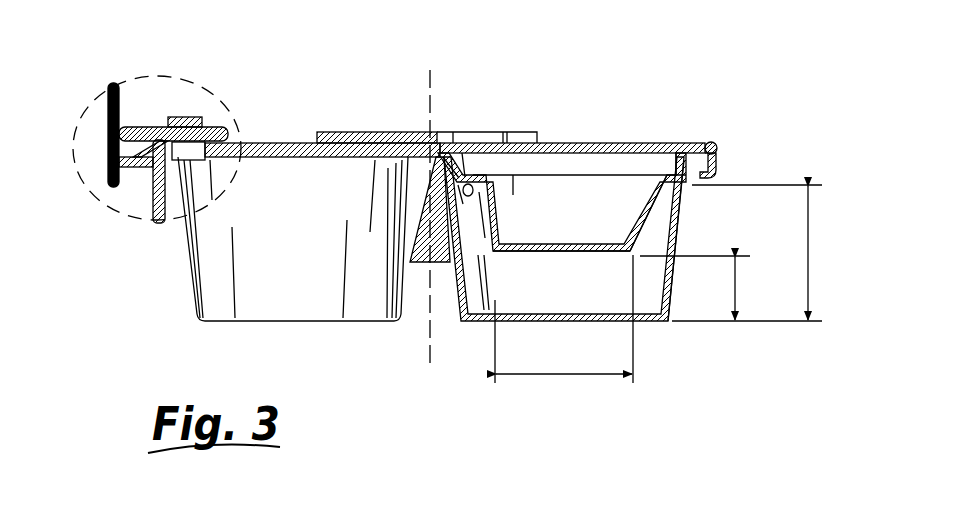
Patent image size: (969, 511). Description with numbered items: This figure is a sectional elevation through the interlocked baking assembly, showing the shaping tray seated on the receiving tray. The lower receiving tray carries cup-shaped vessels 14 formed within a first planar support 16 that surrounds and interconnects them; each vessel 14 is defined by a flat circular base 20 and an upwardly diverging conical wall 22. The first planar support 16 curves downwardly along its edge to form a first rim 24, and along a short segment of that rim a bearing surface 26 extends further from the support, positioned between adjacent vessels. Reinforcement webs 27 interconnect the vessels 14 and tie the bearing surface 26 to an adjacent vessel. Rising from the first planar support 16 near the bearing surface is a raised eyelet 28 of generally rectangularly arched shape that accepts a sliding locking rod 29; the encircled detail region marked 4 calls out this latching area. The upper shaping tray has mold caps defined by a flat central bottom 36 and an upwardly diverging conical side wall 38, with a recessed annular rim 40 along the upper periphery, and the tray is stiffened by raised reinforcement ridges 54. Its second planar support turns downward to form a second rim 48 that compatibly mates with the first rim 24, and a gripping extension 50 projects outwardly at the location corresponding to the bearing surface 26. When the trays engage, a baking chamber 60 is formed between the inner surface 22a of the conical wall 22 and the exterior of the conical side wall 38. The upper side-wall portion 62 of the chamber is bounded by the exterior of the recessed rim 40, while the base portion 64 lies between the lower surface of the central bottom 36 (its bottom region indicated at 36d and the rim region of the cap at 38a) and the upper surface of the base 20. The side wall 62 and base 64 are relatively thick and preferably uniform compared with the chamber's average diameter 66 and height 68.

The detail view circle 4 is at (214, 116).
The cup-shaped vessel 14 is at (738, 356).
The first planar support 16 is at (692, 145).
The flat circular base 20 is at (604, 322).
The conical wall 22 is at (686, 198).
The inner surface 22a is at (683, 233).
The first rim 24 is at (703, 177).
The bearing surface 26 is at (157, 228).
The reinforcement web 27 is at (416, 265).
The raised eyelet 28 is at (190, 120).
The locking rod 29 is at (103, 100).
The flat central bottom 36 is at (533, 240).
The inner cup bottom 36d is at (574, 264).
The conical side wall 38 is at (503, 215).
The lid rim 38a is at (522, 192).
The recessed annular rim 40 is at (478, 200).
The second rim 48 is at (713, 150).
The gripping extension 50 is at (128, 178).
The raised reinforcement ridge 54 is at (347, 132).
The baking chamber 60 is at (537, 303).
The upper side-wall portion 62 is at (630, 233).
The base portion 64 is at (742, 290).
The baking chamber average diameter 66 is at (552, 378).
The baking chamber height 68 is at (822, 232).